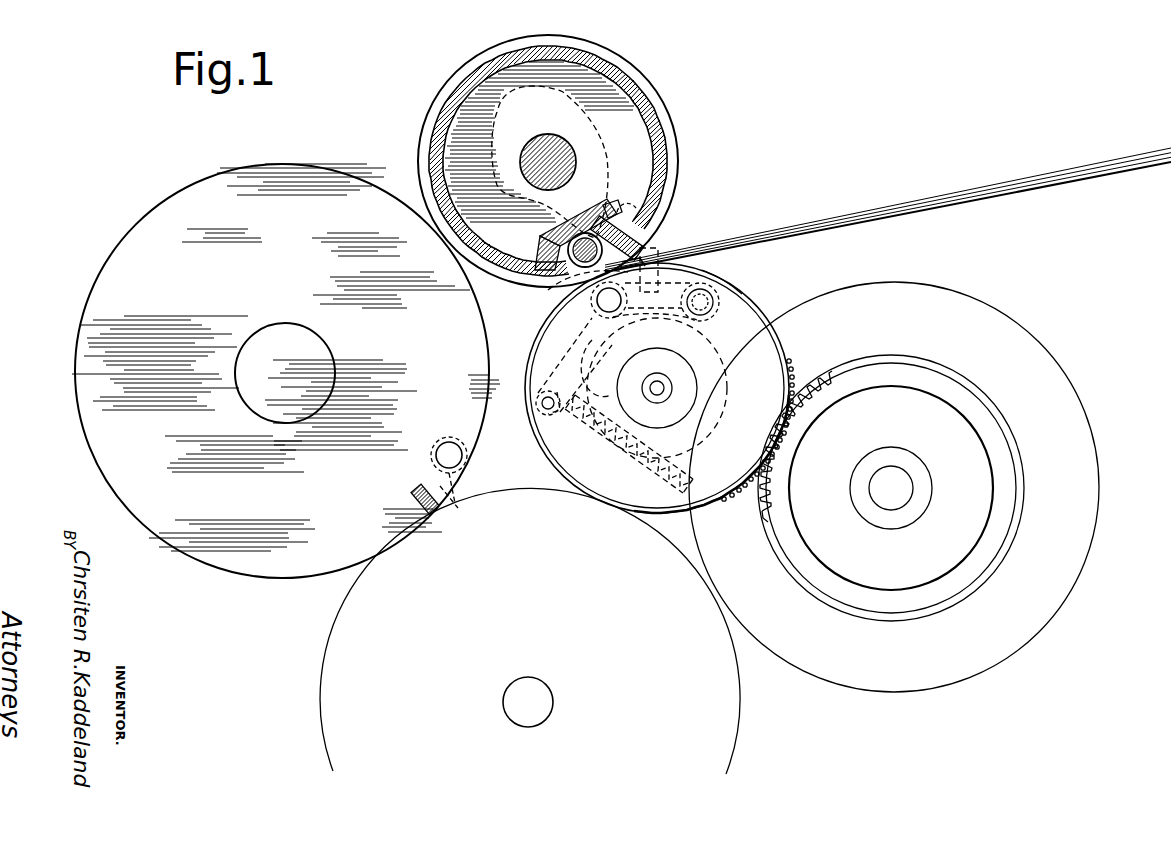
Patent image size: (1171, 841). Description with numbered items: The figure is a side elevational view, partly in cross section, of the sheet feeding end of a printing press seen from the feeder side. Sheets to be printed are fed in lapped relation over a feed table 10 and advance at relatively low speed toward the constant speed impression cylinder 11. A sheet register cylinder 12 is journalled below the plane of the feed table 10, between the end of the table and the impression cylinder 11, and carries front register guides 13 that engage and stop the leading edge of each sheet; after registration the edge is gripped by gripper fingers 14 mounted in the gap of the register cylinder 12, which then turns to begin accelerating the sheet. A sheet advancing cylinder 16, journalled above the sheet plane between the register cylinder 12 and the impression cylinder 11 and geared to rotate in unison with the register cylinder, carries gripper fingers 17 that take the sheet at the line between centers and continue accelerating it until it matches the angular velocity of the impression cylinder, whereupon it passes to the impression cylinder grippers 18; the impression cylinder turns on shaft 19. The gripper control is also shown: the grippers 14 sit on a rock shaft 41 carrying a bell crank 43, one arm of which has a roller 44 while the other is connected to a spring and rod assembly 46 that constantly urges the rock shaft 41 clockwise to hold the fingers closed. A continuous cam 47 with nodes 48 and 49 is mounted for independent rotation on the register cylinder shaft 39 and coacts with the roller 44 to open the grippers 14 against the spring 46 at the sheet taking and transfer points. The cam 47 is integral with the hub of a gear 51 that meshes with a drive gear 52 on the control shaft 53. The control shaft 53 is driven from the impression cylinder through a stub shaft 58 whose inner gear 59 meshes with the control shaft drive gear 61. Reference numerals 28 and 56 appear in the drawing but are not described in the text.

The feed table 10 is at (934, 212).
The impression cylinder 11 is at (246, 574).
The sheet register cylinder 12 is at (740, 318).
The front register guides 13 is at (684, 252).
The gripper fingers 14 is at (630, 258).
The sheet advancing cylinder 16 is at (643, 98).
The gripper fingers 17 is at (645, 230).
The impression cylinder grippers 18 is at (441, 480).
The shaft 19 is at (285, 373).
The shaft 28 is at (566, 170).
The register cylinder shaft 39 is at (662, 383).
The rock shaft 41 is at (609, 300).
The bell crank 43 is at (575, 330).
The roller 44 is at (727, 288).
The spring and rod assembly 46 is at (614, 442).
The continuous cam 47 is at (726, 406).
The node 48 is at (715, 328).
The node 49 is at (588, 370).
The gear 51 is at (787, 388).
The drive gear 52 is at (766, 502).
The control shaft 53 is at (891, 488).
The web 56 is at (598, 110).
The stub shaft 58 is at (528, 702).
The gear 59 is at (738, 698).
The control shaft drive gear 61 is at (1098, 432).